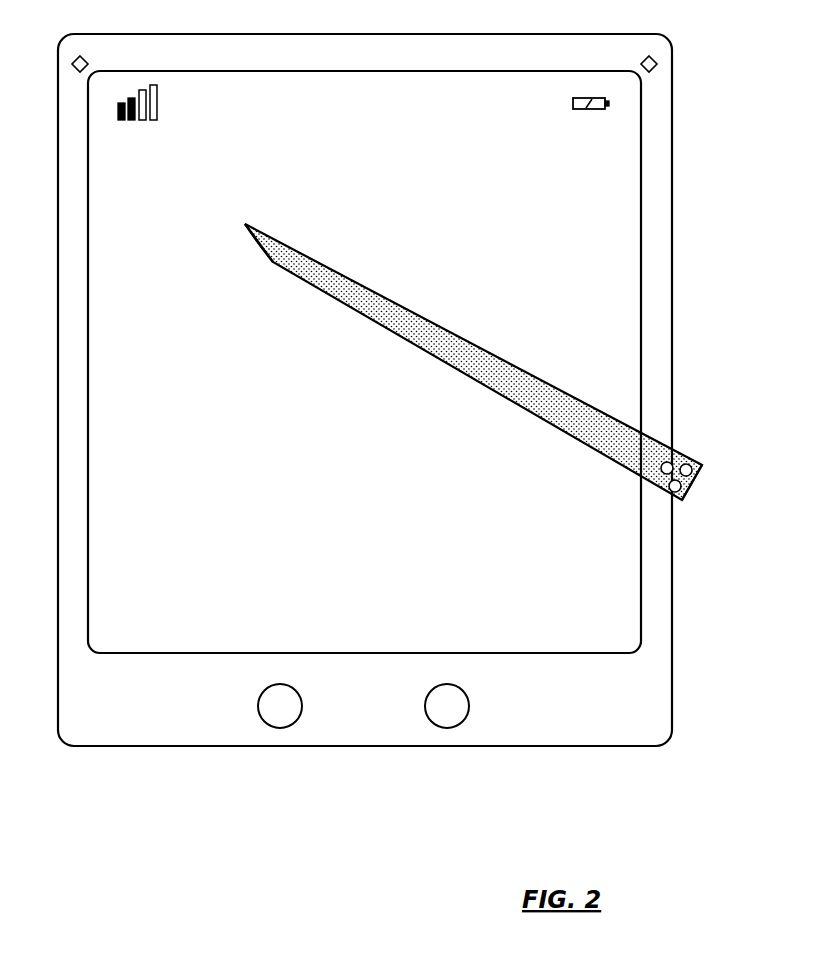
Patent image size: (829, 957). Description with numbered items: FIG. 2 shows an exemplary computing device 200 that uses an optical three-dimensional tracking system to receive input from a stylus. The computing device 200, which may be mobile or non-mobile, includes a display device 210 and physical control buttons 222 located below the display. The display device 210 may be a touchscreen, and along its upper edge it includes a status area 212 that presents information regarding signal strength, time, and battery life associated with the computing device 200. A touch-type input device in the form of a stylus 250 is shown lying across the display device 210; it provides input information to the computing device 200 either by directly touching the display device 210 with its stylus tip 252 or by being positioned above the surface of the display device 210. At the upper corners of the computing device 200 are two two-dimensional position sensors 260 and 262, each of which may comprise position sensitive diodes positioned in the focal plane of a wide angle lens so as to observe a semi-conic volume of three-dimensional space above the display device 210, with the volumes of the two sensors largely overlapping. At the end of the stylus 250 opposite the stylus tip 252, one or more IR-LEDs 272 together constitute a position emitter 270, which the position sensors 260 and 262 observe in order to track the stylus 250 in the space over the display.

The computing device 200 is at (365, 425).
The display device 210 is at (364, 362).
The status area 212 is at (702, 85).
The physical control buttons 222 is at (702, 653).
The stylus 250 is at (473, 362).
The stylus tip 252 is at (243, 226).
The 2D position sensor 260 is at (657, 64).
The 2D position sensor 262 is at (72, 64).
The position emitter 270 is at (698, 503).
The IR-LEDs 272 is at (686, 464).